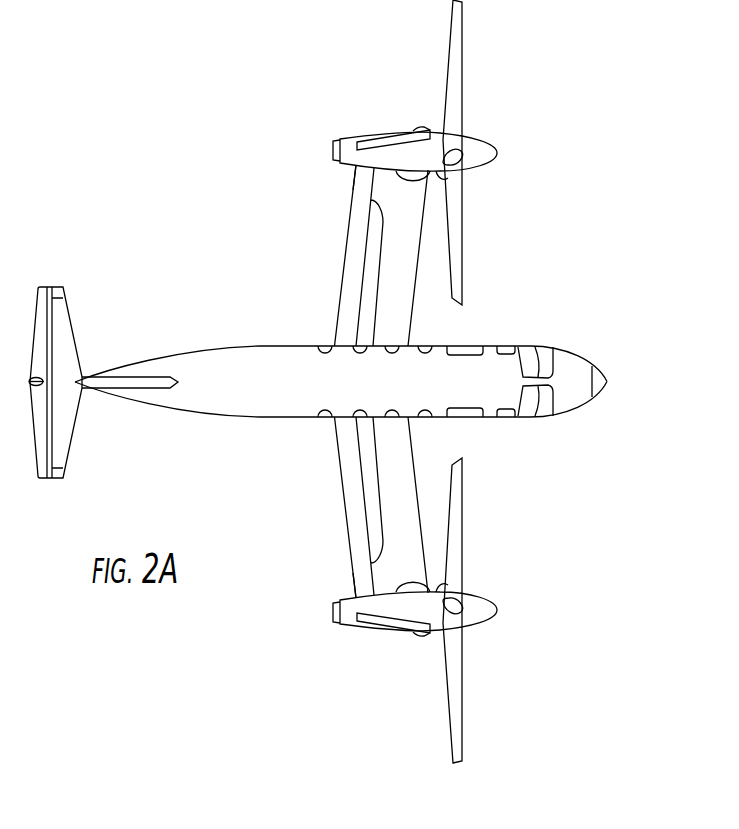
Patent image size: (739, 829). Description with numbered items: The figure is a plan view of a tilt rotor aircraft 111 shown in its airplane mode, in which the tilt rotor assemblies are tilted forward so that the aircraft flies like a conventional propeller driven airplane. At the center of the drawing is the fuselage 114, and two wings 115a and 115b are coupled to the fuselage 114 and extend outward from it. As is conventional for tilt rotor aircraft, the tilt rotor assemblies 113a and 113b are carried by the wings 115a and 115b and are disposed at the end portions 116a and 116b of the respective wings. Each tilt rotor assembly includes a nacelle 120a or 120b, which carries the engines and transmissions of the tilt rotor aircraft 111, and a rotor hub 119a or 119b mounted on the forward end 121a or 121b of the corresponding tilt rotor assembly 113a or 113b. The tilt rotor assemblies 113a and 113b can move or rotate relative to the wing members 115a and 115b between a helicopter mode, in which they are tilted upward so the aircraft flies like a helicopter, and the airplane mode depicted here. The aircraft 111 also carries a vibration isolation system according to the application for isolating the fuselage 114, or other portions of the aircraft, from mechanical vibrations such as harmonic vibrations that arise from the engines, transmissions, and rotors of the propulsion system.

The tilt rotor aircraft 111 is at (192, 319).
The tilt rotor assembly 113a is at (351, 124).
The tilt rotor assembly 113b is at (352, 645).
The fuselage 114 is at (242, 418).
The wing 115a is at (347, 247).
The wing 115b is at (347, 515).
The end portion of wing 116a is at (345, 180).
The end portion of wing 116b is at (348, 585).
The rotor hub 119a is at (478, 140).
The rotor hub 119b is at (485, 623).
The nacelle 120a is at (350, 138).
The nacelle 120b is at (353, 627).
The forward end of tilt rotor assembly 121a is at (437, 177).
The forward end of tilt rotor assembly 121b is at (437, 589).